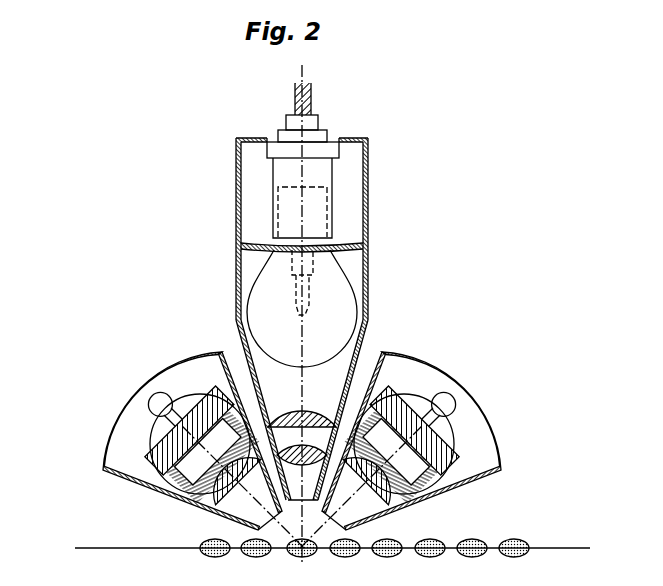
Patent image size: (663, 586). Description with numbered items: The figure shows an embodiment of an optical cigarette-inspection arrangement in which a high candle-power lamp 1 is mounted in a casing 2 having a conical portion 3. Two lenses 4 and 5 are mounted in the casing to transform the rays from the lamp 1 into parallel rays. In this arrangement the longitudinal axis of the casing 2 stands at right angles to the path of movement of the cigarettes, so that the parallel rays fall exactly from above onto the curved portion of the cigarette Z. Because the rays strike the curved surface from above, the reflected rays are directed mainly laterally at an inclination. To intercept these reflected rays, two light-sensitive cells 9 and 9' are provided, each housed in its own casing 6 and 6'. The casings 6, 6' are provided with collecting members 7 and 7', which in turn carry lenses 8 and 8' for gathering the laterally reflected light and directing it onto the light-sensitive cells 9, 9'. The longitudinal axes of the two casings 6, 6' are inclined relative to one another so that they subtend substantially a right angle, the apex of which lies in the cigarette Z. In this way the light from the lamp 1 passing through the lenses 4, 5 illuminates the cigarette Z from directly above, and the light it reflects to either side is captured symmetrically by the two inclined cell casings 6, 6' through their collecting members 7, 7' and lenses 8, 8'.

The high candle-power lamp 1 is at (340, 300).
The casing 2 is at (407, 228).
The conical portion 3 is at (366, 347).
The lens 4 is at (305, 418).
The lens 5 is at (310, 484).
The casing 6 is at (137, 394).
The collecting member 7 is at (192, 441).
The lens 8 is at (217, 489).
The light-sensitive cell 9 is at (204, 478).
The casing 6' is at (468, 399).
The collecting member 7' is at (411, 441).
The lens 8' is at (376, 490).
The light-sensitive cell 9' is at (399, 478).
The cigarette Z is at (297, 556).